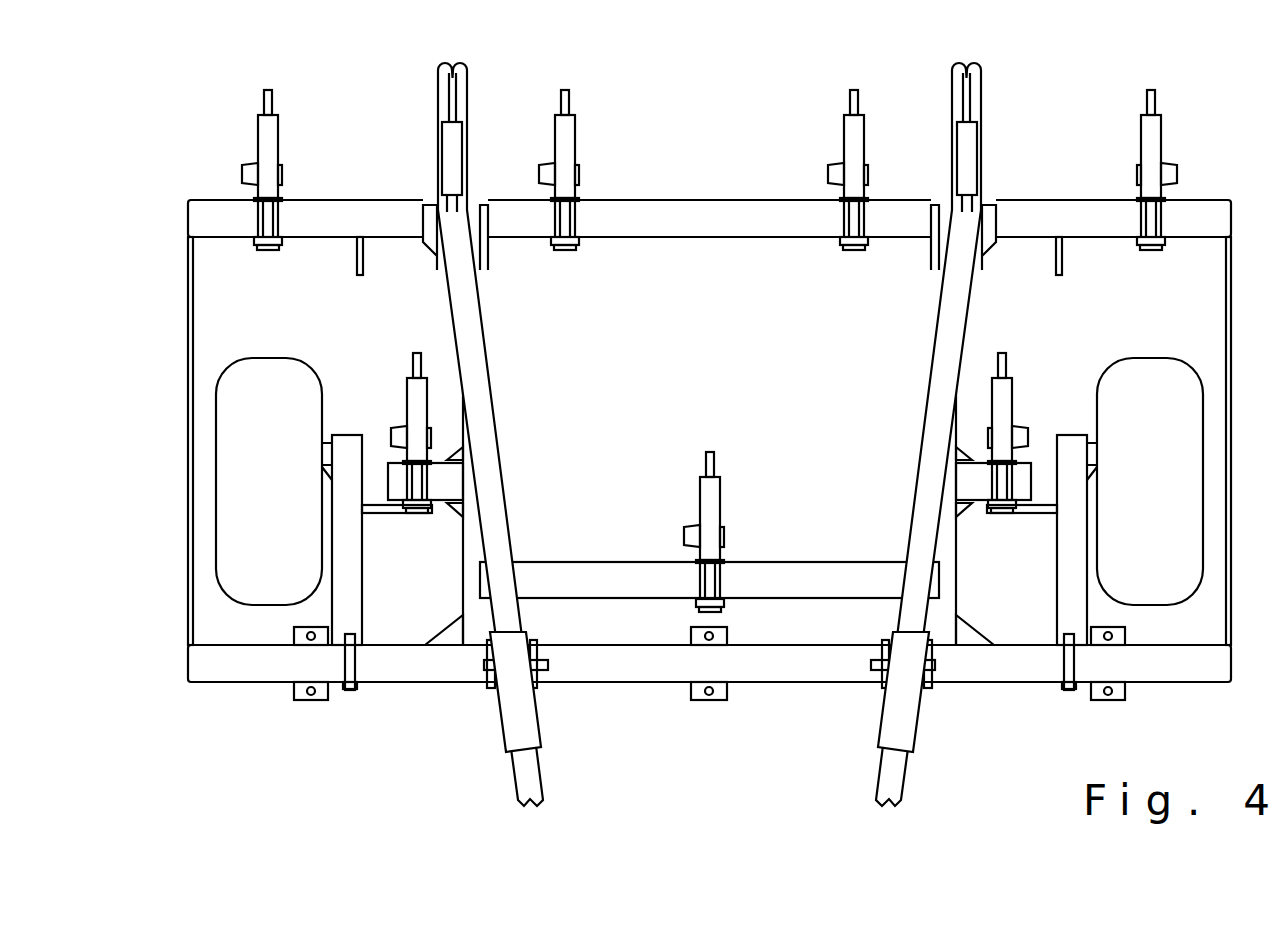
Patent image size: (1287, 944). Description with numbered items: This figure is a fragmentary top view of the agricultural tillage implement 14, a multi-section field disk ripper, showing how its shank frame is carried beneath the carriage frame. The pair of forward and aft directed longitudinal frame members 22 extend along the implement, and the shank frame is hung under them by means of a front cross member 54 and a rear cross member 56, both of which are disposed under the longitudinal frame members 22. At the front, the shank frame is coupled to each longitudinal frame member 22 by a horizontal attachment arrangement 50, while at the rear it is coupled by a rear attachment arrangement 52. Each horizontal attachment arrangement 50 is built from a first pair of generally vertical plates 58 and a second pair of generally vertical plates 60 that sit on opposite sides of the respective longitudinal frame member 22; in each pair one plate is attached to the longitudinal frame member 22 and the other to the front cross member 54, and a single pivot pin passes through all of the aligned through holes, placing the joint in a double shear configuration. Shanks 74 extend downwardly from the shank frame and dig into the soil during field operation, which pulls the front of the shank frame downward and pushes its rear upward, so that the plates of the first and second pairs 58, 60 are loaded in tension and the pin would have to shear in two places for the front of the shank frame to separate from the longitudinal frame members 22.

The agricultural tillage implement 14 is at (375, 725).
The longitudinal frame member 22 is at (493, 482).
The horizontal attachment arrangement 50 is at (842, 688).
The rear attachment arrangement 52 is at (922, 223).
The front cross member 54 is at (228, 673).
The rear cross member 56 is at (217, 210).
The first pair of generally vertical plates 58 is at (560, 717).
The second pair of generally vertical plates 60 is at (927, 718).
The shank 74 is at (569, 118).